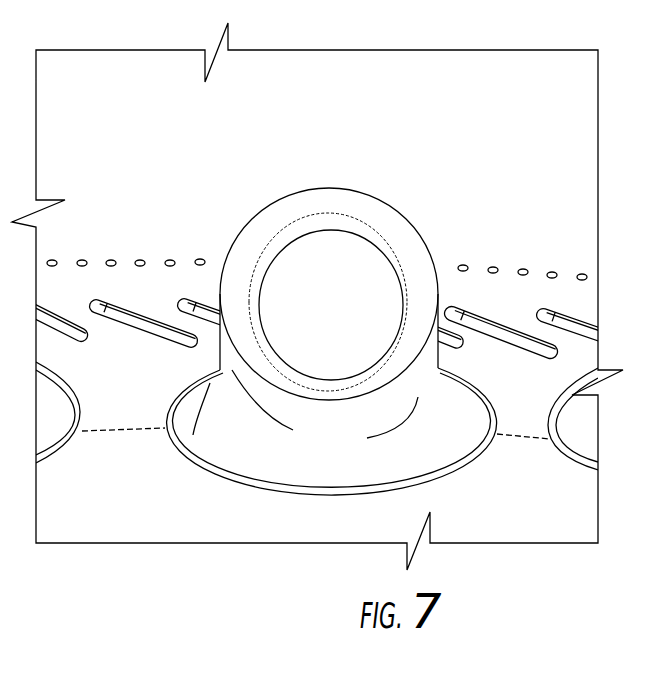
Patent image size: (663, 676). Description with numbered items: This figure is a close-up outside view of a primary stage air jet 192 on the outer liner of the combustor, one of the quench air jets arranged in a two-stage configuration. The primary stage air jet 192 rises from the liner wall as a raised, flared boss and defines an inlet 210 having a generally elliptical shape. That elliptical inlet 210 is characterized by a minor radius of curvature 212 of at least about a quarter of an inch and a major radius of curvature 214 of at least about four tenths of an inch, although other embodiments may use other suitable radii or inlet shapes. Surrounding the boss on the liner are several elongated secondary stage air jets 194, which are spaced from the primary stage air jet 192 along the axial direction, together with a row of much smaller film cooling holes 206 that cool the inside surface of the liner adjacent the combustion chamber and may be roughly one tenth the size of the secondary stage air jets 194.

The primary stage air jet 192 is at (346, 186).
The secondary stage air jet 194 is at (151, 304).
The film cooling hole 206 is at (111, 255).
The inlet 210 is at (383, 288).
The minor radius of curvature 212 is at (346, 380).
The major radius of curvature 214 is at (265, 310).